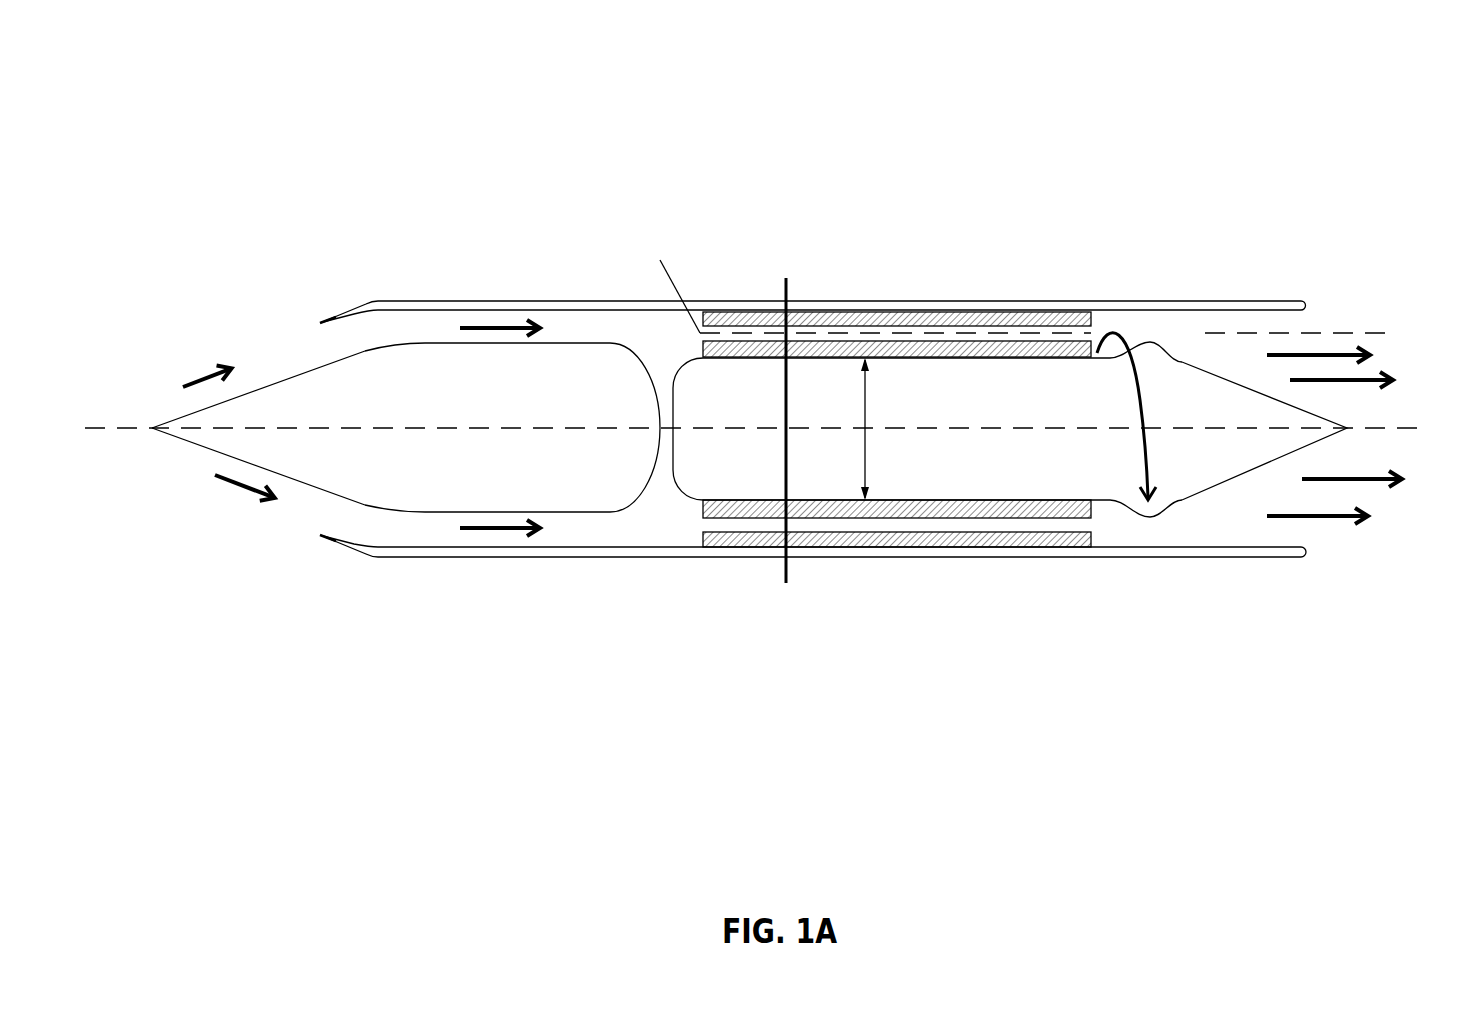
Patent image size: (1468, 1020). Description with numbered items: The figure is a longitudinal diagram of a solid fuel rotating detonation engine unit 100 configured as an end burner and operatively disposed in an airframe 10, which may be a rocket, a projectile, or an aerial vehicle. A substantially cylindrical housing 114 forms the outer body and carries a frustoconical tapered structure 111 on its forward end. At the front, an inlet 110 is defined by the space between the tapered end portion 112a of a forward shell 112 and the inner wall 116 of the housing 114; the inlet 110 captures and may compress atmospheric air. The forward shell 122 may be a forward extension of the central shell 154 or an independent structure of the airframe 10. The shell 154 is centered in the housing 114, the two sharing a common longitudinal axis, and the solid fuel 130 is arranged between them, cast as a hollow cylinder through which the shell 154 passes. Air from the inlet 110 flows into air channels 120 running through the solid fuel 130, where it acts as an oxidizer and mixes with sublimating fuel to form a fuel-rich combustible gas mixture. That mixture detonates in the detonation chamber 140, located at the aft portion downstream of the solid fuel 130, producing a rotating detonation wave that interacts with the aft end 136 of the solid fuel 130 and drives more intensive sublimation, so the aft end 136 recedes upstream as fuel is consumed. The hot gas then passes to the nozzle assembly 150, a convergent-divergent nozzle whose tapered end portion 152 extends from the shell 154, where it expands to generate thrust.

The airframe 10 is at (552, 255).
The solid fuel rotating detonation engine unit 100 is at (1173, 325).
The inlet 110 is at (308, 352).
The frustoconical tapered structure 111 is at (339, 312).
The forward shell 112 is at (298, 460).
The tapered end portion 112a is at (272, 387).
The housing 114 is at (440, 300).
The inner wall 116 is at (367, 303).
The air channels 120 is at (738, 330).
The forward shell 122 is at (945, 310).
The solid fuel 130 is at (817, 310).
The aft end of the solid fuel 136 is at (1091, 312).
The detonation chamber 140 is at (1110, 320).
The nozzle assembly 150 is at (1182, 362).
The tapered end portion 152 is at (1227, 397).
The shell 154 is at (1045, 503).